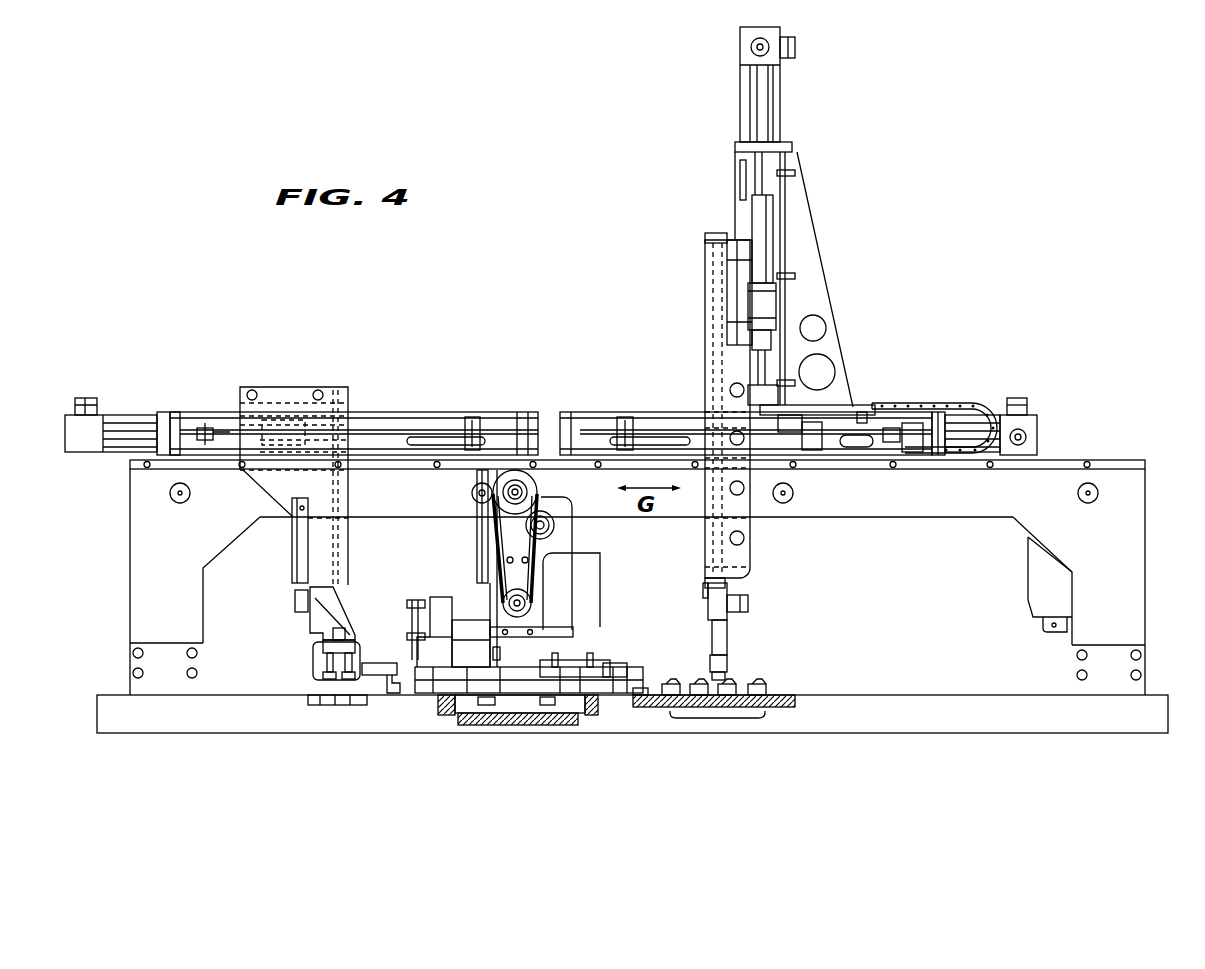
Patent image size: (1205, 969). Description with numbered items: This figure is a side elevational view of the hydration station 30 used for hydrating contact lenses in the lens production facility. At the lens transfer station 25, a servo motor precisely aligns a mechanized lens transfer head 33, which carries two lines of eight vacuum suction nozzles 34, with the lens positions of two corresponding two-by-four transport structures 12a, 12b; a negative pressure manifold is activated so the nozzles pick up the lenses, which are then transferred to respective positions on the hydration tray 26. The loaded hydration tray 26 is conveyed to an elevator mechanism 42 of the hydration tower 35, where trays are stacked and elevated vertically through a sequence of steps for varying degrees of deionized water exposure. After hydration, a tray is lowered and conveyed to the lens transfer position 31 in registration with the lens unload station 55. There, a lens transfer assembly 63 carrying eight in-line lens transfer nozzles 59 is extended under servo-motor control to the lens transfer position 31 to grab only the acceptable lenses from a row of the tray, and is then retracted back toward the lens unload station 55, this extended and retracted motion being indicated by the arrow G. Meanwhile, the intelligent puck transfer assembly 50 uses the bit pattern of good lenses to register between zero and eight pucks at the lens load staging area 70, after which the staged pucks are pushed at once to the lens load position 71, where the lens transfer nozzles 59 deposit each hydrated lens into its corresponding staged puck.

The transport structure 12a is at (318, 735).
The transport structure 12b is at (318, 703).
The lens transfer station 25 is at (248, 600).
The hydration tray 26 is at (407, 697).
The hydration station 30 is at (556, 408).
The lens transfer position 31 is at (604, 705).
The lens transfer head 33 is at (347, 606).
The vacuum suction nozzles 34 is at (313, 660).
The hydration tower 35 is at (505, 568).
The elevator mechanism 42 is at (535, 590).
The puck transfer assembly 50 is at (743, 667).
The lens unload station 55 is at (726, 625).
The lens transfer nozzles 59 is at (727, 637).
The lens transfer assembly 63 is at (705, 233).
The lens load staging area 70 is at (718, 718).
The lens load position 71 is at (735, 690).